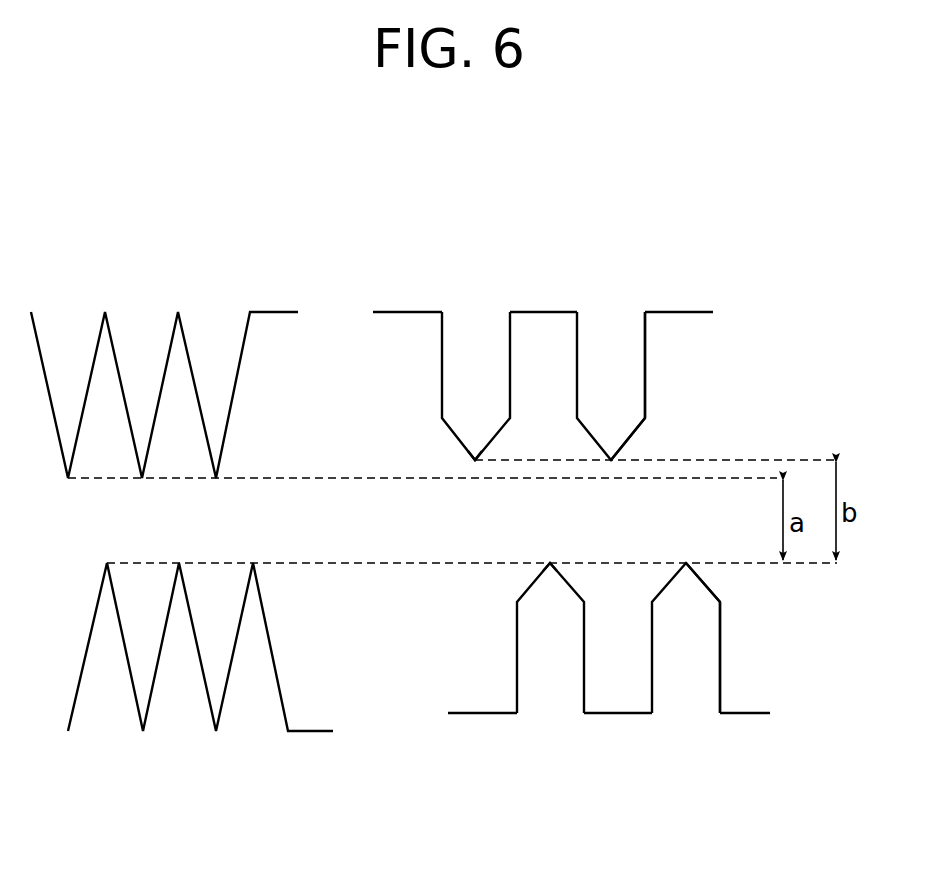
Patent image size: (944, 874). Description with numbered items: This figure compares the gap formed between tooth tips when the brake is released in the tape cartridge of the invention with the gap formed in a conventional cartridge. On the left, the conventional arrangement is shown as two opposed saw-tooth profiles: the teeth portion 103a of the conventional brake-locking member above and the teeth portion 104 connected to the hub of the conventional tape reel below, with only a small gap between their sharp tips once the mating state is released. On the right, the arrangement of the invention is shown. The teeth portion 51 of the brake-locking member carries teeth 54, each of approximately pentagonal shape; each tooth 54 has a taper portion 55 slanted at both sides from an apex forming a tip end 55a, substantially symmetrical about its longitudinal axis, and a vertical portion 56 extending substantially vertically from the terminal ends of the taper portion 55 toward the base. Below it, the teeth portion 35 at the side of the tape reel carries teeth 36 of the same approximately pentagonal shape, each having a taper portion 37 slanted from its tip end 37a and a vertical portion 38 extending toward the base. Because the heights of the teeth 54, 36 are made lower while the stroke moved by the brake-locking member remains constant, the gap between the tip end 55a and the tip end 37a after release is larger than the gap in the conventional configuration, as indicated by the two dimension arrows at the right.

The teeth portion 103a is at (145, 330).
The teeth portion 104 is at (180, 700).
The teeth portion 51 is at (548, 320).
The teeth 54 is at (548, 351).
The taper portion 55 is at (640, 430).
The tip end 55a is at (472, 462).
The vertical portion 56 is at (645, 368).
The teeth portion 35 is at (615, 709).
The teeth 36 is at (615, 687).
The taper portion 37 is at (710, 590).
The tip end 37a is at (550, 563).
The vertical portion 38 is at (720, 652).